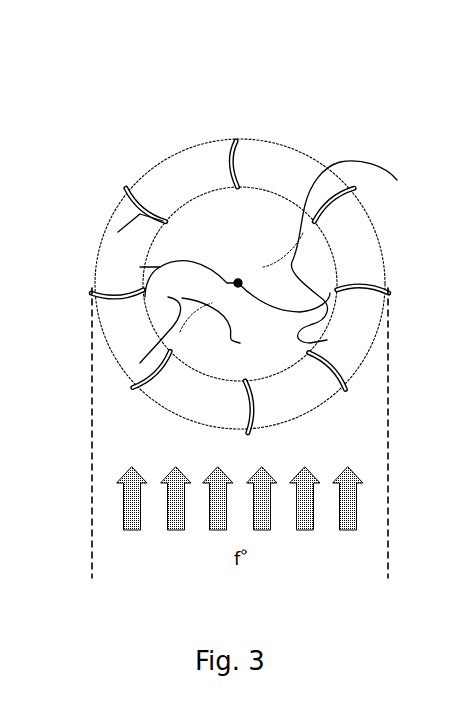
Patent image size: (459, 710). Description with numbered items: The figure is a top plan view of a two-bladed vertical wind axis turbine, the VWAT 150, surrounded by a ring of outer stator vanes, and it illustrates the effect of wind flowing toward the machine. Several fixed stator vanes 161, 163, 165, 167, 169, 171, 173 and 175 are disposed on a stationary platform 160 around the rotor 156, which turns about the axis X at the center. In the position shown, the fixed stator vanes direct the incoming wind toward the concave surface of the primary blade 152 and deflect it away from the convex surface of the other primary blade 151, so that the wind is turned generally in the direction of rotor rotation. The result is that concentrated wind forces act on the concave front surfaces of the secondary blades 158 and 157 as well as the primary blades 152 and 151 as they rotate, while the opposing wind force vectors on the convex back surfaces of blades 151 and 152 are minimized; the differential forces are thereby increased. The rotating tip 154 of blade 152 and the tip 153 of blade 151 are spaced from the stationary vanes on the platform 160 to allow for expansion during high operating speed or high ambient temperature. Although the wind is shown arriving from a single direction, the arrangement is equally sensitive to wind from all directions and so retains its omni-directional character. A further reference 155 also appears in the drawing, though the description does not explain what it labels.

The VWAT 150 is at (341, 135).
The primary blade 151 is at (310, 337).
The primary blade 152 is at (240, 343).
The tip of blade 151 153 is at (328, 300).
The rotating tip of blade 152 154 is at (197, 307).
The blade tip 155 is at (320, 168).
The rotor 156 is at (270, 228).
The secondary blade 157 is at (287, 312).
The secondary blade 158 is at (197, 310).
The stationary platform 160 is at (195, 163).
The fixed stator vane 161 is at (362, 278).
The fixed stator vane 163 is at (326, 366).
The fixed stator vane 165 is at (255, 408).
The fixed stator vane 167 is at (140, 353).
The fixed stator vane 169 is at (115, 290).
The fixed stator vane 171 is at (118, 232).
The fixed stator vane 173 is at (205, 165).
The fixed stator vane 175 is at (366, 252).
The axis X is at (238, 283).